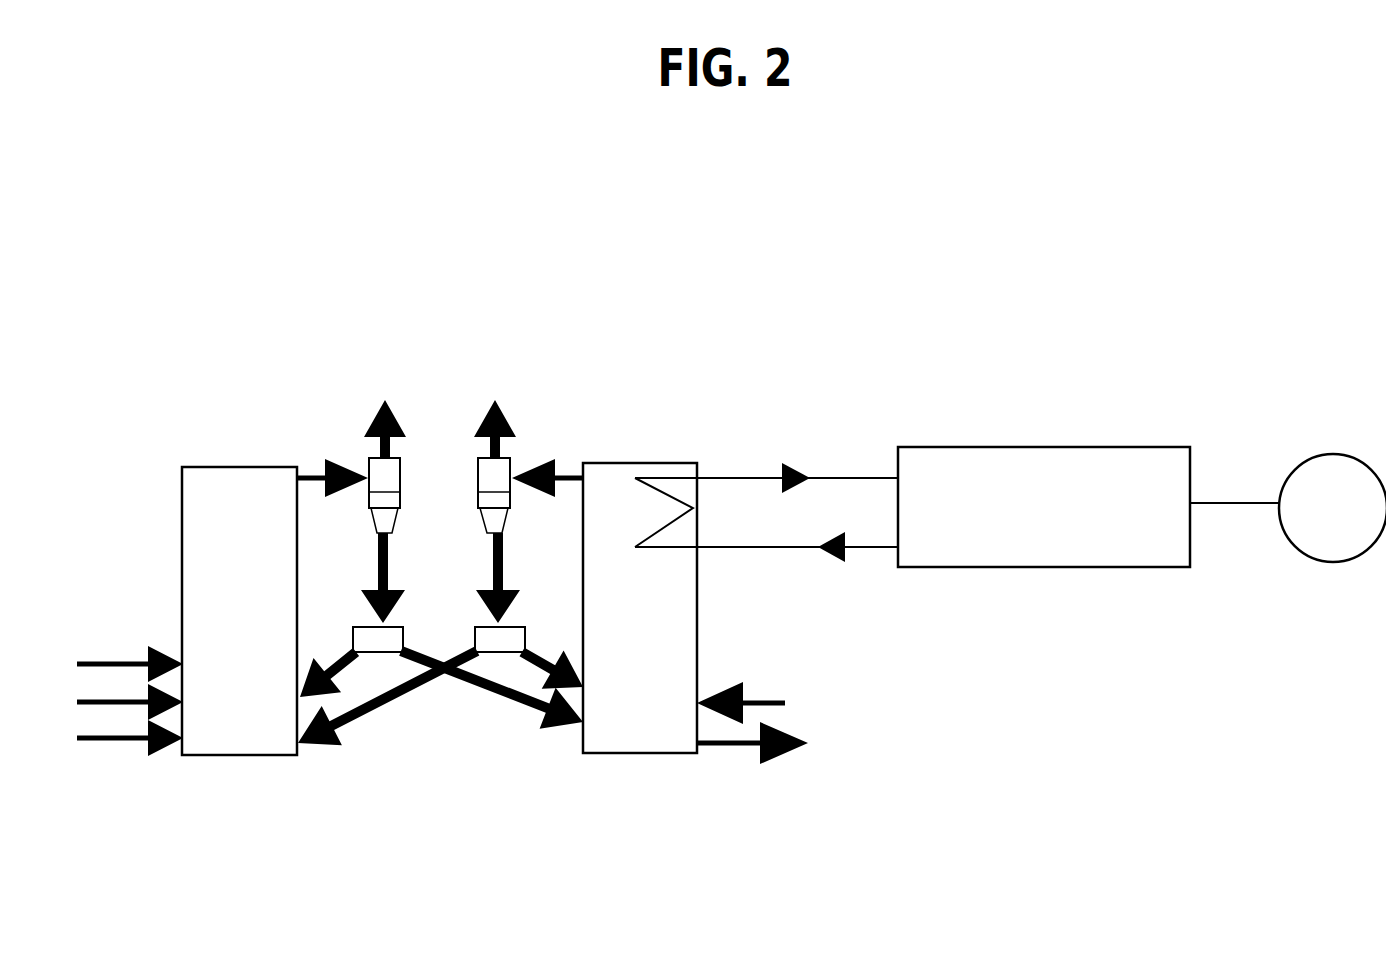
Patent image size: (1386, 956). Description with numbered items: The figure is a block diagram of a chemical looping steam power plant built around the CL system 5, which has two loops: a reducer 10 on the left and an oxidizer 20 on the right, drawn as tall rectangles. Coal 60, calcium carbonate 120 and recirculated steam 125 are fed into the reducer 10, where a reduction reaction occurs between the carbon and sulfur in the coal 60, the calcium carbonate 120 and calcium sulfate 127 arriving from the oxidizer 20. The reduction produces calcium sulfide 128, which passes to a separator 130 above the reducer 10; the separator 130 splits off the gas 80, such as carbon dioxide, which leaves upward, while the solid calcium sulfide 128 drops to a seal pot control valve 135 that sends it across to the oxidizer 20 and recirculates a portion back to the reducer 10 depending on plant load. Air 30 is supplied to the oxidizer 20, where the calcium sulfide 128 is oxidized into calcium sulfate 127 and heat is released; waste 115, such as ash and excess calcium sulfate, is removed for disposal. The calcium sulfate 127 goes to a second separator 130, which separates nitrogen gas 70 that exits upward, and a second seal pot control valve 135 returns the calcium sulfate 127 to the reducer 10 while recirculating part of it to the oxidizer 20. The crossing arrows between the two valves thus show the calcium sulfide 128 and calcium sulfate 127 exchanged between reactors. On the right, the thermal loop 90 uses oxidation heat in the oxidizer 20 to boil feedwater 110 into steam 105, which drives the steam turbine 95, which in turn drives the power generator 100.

The CL system 5 is at (121, 391).
The reducer 10 is at (227, 599).
The oxidizer 20 is at (631, 607).
The air 30 is at (762, 700).
The coal 60 is at (120, 662).
The nitrogen gas 70 is at (577, 472).
The gas 80 is at (305, 473).
The thermal loop 90 is at (872, 457).
The steam turbine 95 is at (1038, 511).
The power generator 100 is at (1319, 514).
The steam 105 is at (775, 478).
The feedwater 110 is at (792, 547).
The waste 115 is at (778, 752).
The calcium carbonate 120 is at (103, 699).
The recirculated steam 125 is at (120, 741).
The calcium sulfate 127 is at (575, 487).
The calcium sulfide 128 is at (307, 487).
The separator 130 is at (439, 495).
The seal pot control valve 135 is at (366, 648).